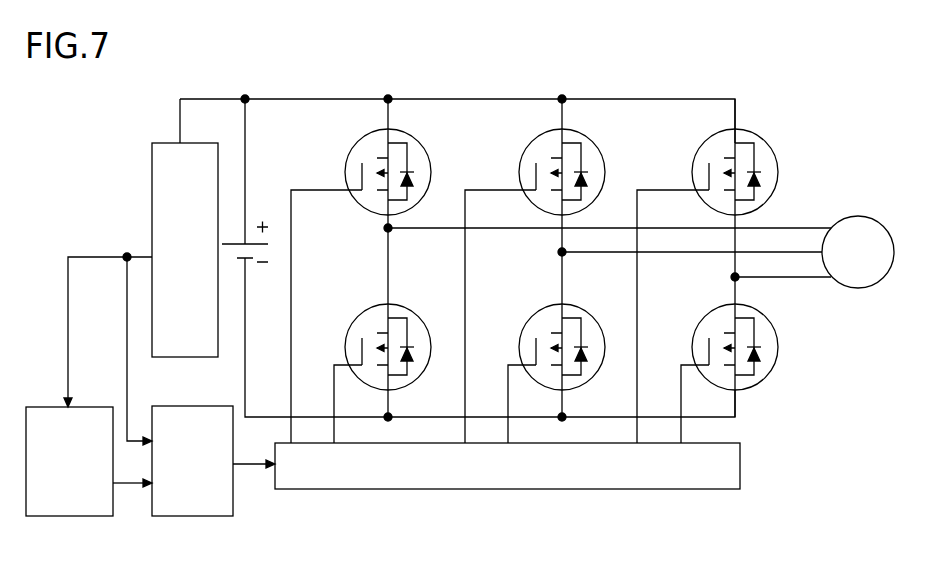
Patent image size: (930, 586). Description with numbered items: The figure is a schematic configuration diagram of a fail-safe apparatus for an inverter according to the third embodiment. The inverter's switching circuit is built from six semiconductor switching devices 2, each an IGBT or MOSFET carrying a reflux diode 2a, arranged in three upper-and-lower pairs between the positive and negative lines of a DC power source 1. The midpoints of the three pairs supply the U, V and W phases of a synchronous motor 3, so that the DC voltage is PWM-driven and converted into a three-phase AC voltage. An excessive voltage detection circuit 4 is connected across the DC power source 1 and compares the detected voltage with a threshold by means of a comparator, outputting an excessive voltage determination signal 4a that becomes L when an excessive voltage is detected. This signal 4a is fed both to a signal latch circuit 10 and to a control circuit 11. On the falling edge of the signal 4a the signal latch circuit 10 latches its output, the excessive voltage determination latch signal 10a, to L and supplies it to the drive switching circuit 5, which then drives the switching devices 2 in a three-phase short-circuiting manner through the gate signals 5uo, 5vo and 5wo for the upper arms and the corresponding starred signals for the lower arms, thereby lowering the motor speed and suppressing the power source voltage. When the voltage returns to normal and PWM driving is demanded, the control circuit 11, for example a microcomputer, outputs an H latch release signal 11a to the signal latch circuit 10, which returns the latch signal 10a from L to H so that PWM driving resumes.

The DC power source 1 is at (222, 243).
The semiconductor switching device 2 is at (358, 143).
The reflux diode 2a is at (413, 182).
The synchronous motor 3 is at (848, 217).
The excessive voltage detection circuit 4 is at (152, 190).
The excessive voltage determination signal 4a is at (127, 388).
The drive switching circuit 5 is at (740, 466).
The output signal 5uo is at (291, 366).
The output signal 5vo is at (465, 366).
The output signal 5wo is at (637, 366).
The signal latch circuit 10 is at (180, 516).
The excessive voltage determination latch signal 10a is at (248, 467).
The control circuit 11 is at (50, 406).
The latch release signal 11a is at (128, 484).